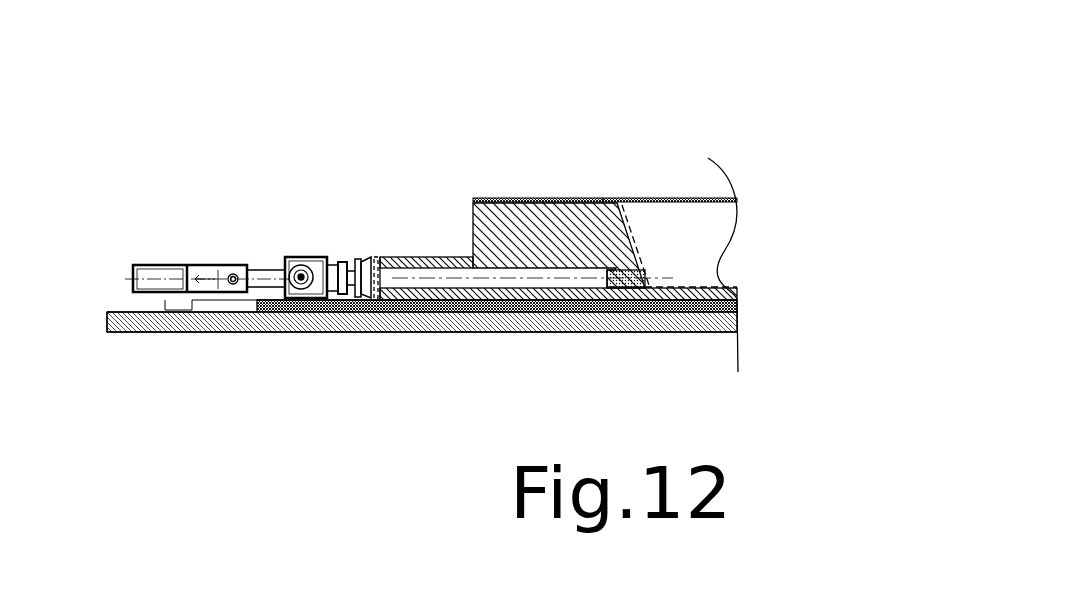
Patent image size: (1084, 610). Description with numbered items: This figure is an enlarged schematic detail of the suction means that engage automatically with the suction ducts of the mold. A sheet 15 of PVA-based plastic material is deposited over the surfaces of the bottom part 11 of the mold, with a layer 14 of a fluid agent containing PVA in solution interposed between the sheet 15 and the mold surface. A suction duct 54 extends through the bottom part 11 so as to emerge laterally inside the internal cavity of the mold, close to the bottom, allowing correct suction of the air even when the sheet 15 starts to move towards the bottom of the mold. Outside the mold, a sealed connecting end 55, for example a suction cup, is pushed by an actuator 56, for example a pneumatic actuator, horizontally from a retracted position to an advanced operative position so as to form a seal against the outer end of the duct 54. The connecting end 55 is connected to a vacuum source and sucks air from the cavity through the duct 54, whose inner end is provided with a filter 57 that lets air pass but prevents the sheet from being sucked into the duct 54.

The bottom part of the mold 11 is at (483, 230).
The layer of fluid agent 14 is at (475, 200).
The sheet of PVA-based plastic material 15 is at (662, 198).
The suction duct 54 is at (437, 278).
The sealed connecting end 55 is at (363, 258).
The actuator 56 is at (180, 270).
The filter 57 is at (640, 277).